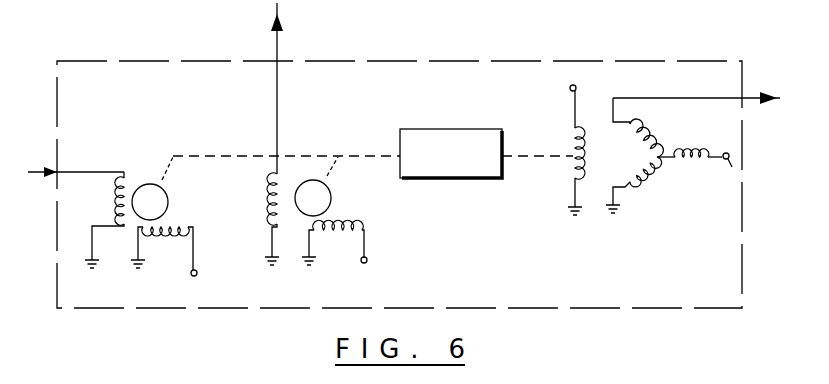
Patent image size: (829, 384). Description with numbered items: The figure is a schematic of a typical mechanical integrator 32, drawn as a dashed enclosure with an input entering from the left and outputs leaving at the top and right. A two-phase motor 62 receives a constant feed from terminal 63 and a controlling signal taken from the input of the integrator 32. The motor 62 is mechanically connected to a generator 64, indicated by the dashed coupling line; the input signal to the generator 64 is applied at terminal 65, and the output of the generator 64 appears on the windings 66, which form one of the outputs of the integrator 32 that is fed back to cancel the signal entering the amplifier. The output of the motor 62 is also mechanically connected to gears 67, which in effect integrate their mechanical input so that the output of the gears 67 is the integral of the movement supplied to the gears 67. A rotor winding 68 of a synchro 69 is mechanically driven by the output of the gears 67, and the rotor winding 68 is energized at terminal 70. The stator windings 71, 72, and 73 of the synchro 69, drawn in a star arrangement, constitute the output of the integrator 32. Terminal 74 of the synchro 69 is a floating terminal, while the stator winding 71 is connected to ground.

The integrator 32 is at (548, 252).
The two-phase motor 62 is at (138, 175).
The terminal 63 is at (197, 270).
The generator 64 is at (294, 178).
The terminal 65 is at (367, 258).
The windings 66 is at (274, 199).
The gears 67 is at (442, 180).
The rotor winding 68 is at (571, 168).
The synchro 69 is at (669, 113).
The terminal 70 is at (576, 86).
The stator winding 71 is at (640, 174).
The stator winding 72 is at (643, 138).
The stator winding 73 is at (685, 153).
The terminal 74 is at (727, 172).